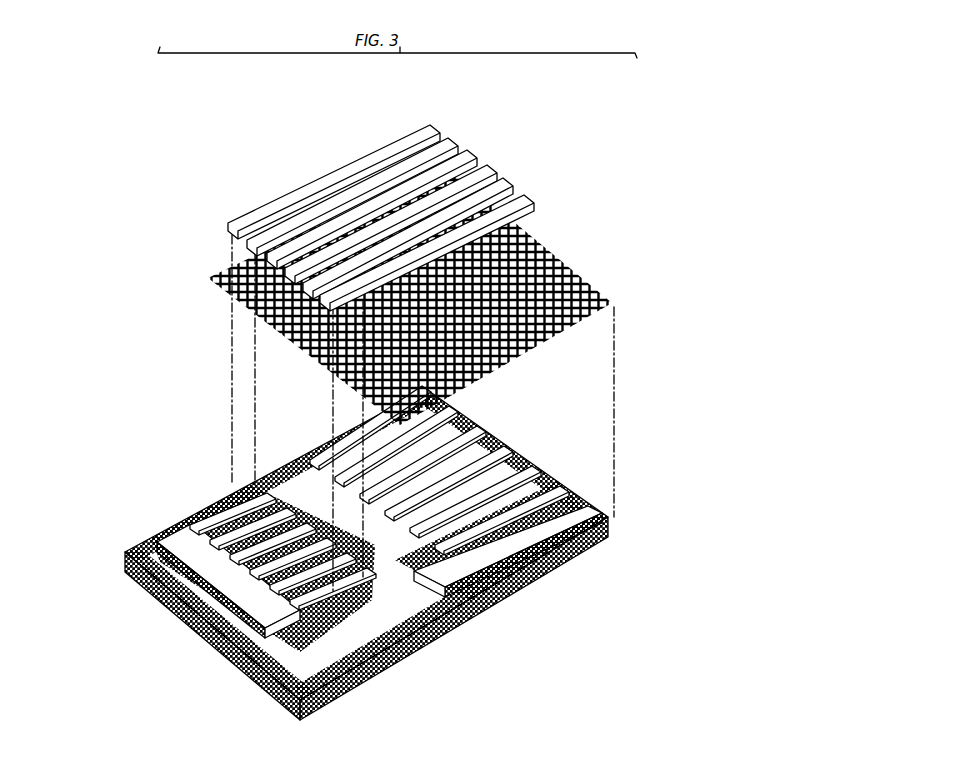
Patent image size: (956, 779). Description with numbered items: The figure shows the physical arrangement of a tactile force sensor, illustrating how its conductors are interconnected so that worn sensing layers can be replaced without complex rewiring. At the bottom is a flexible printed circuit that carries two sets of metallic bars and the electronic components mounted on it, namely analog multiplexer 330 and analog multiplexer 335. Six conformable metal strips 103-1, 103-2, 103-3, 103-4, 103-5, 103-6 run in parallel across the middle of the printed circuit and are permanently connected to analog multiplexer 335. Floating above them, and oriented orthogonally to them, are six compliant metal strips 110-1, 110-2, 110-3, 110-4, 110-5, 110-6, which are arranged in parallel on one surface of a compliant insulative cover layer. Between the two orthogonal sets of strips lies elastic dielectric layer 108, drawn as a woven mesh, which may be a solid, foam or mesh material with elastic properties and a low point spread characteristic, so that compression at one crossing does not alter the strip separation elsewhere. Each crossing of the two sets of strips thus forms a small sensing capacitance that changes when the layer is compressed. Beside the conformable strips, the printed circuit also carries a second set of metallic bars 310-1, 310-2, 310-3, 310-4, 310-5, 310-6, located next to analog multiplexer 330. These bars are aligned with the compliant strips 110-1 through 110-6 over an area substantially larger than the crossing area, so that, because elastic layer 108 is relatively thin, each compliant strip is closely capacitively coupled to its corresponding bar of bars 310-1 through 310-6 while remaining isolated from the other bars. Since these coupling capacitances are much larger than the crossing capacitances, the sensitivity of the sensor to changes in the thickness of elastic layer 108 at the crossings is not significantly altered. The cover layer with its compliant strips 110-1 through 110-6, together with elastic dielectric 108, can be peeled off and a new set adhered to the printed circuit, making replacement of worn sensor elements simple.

The compliant metal strip 110-1 is at (520, 196).
The compliant metal strip 110-2 is at (501, 181).
The compliant metal strip 110-3 is at (487, 167).
The compliant metal strip 110-4 is at (464, 151).
The compliant metal strip 110-5 is at (443, 138).
The compliant metal strip 110-6 is at (418, 122).
The elastic dielectric layer 108 is at (580, 273).
The conformable metal strip 103-1 is at (320, 455).
The conformable metal strip 103-2 is at (352, 466).
The conformable metal strip 103-3 is at (452, 507).
The conformable metal strip 103-4 is at (477, 500).
The conformable metal strip 103-5 is at (513, 490).
The conformable metal strip 103-6 is at (530, 488).
The metallic bar 310-1 is at (296, 610).
The metallic bar 310-2 is at (277, 593).
The metallic bar 310-3 is at (256, 578).
The metallic bar 310-4 is at (237, 565).
The metallic bar 310-5 is at (228, 532).
The metallic bar 310-6 is at (235, 506).
The analog multiplexer 330 is at (200, 562).
The analog multiplexer 335 is at (545, 517).